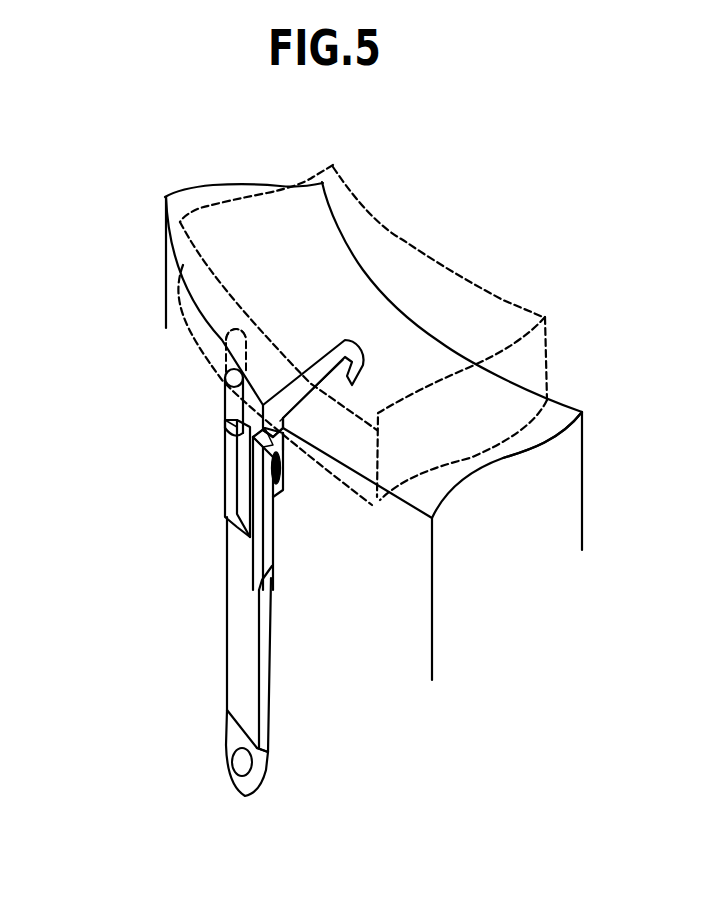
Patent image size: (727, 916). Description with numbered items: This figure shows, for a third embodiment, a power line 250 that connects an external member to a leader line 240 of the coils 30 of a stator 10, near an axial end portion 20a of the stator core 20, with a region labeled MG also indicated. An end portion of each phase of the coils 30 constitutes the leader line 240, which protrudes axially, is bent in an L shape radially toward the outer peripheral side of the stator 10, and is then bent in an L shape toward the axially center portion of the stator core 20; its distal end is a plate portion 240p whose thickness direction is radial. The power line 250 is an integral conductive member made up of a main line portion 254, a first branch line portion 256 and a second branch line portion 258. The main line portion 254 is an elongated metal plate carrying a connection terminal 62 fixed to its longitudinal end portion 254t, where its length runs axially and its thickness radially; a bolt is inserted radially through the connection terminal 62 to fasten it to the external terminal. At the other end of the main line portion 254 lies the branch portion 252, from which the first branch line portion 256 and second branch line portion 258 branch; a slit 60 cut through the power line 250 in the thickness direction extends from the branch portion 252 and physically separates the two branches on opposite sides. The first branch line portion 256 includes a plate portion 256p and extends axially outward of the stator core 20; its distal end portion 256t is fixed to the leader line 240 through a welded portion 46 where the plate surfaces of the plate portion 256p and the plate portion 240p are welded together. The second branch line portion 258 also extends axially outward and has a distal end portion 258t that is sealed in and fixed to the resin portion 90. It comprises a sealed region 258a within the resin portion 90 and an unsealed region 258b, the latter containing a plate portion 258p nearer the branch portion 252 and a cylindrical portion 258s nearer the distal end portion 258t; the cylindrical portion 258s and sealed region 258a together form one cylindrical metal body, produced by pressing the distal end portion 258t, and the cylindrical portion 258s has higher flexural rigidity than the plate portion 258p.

The magnet MG is at (170, 178).
The resin portion 90 is at (393, 257).
The stator 10 is at (512, 282).
The coils 30 is at (522, 371).
The stator core 20 is at (563, 507).
The axial end portion 20a is at (557, 417).
The leader line 240 is at (377, 356).
The plate portion 240p is at (290, 462).
The power line 250 is at (219, 559).
The first branch line portion 256 is at (312, 588).
The distal end portion 256t is at (272, 433).
The plate portion 256p is at (262, 485).
The welded portion 46 is at (280, 470).
The branch portion 252 is at (220, 656).
The connection terminal 62 is at (232, 742).
The main line portion 254 is at (298, 667).
The longitudinal end portion 254t is at (265, 757).
The second branch line portion 258 is at (183, 429).
The sealed region 258a is at (206, 349).
The distal end portion 258t is at (246, 325).
The unsealed region 258b is at (161, 453).
The cylindrical portion 258s is at (232, 412).
The plate portion 258p is at (224, 455).
The slit 60 is at (245, 488).